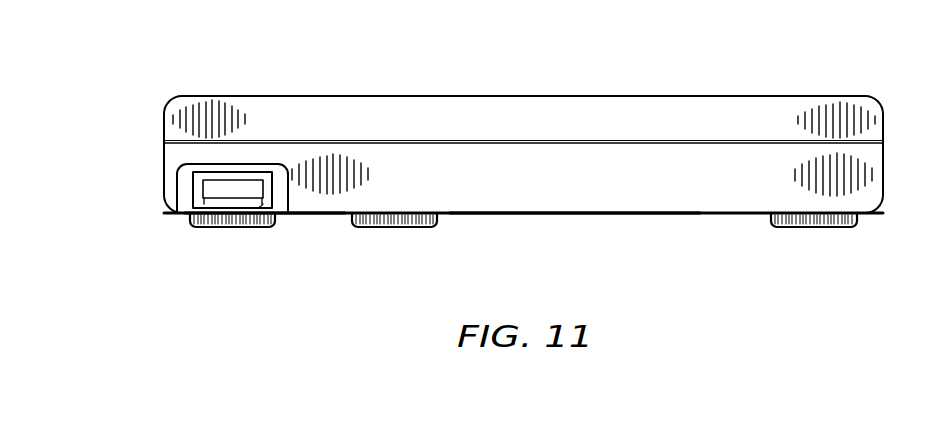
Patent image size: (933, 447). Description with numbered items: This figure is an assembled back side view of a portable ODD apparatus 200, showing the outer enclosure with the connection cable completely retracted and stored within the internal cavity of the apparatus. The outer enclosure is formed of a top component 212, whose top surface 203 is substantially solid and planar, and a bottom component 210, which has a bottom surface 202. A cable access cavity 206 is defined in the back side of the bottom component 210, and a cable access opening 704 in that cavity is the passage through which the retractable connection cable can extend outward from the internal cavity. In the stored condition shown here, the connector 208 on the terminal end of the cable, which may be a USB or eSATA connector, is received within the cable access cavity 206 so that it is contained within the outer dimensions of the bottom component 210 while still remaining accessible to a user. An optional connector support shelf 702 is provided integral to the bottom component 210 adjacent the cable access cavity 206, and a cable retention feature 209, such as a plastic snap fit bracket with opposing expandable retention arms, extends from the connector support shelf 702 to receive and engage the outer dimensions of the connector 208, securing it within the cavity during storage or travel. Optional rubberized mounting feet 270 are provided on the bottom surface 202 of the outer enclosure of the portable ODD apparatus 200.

The portable ODD apparatus 200 is at (138, 76).
The bottom surface 202 is at (608, 213).
The top surface 203 is at (495, 96).
The cable access cavity 206 is at (218, 214).
The connector 208 is at (257, 203).
The cable retention feature 209 is at (202, 209).
The bottom component 210 is at (688, 198).
The top component 212 is at (620, 107).
The mounting feet 270 is at (228, 227).
The connector support shelf 702 is at (213, 168).
The cable access opening 704 is at (242, 208).